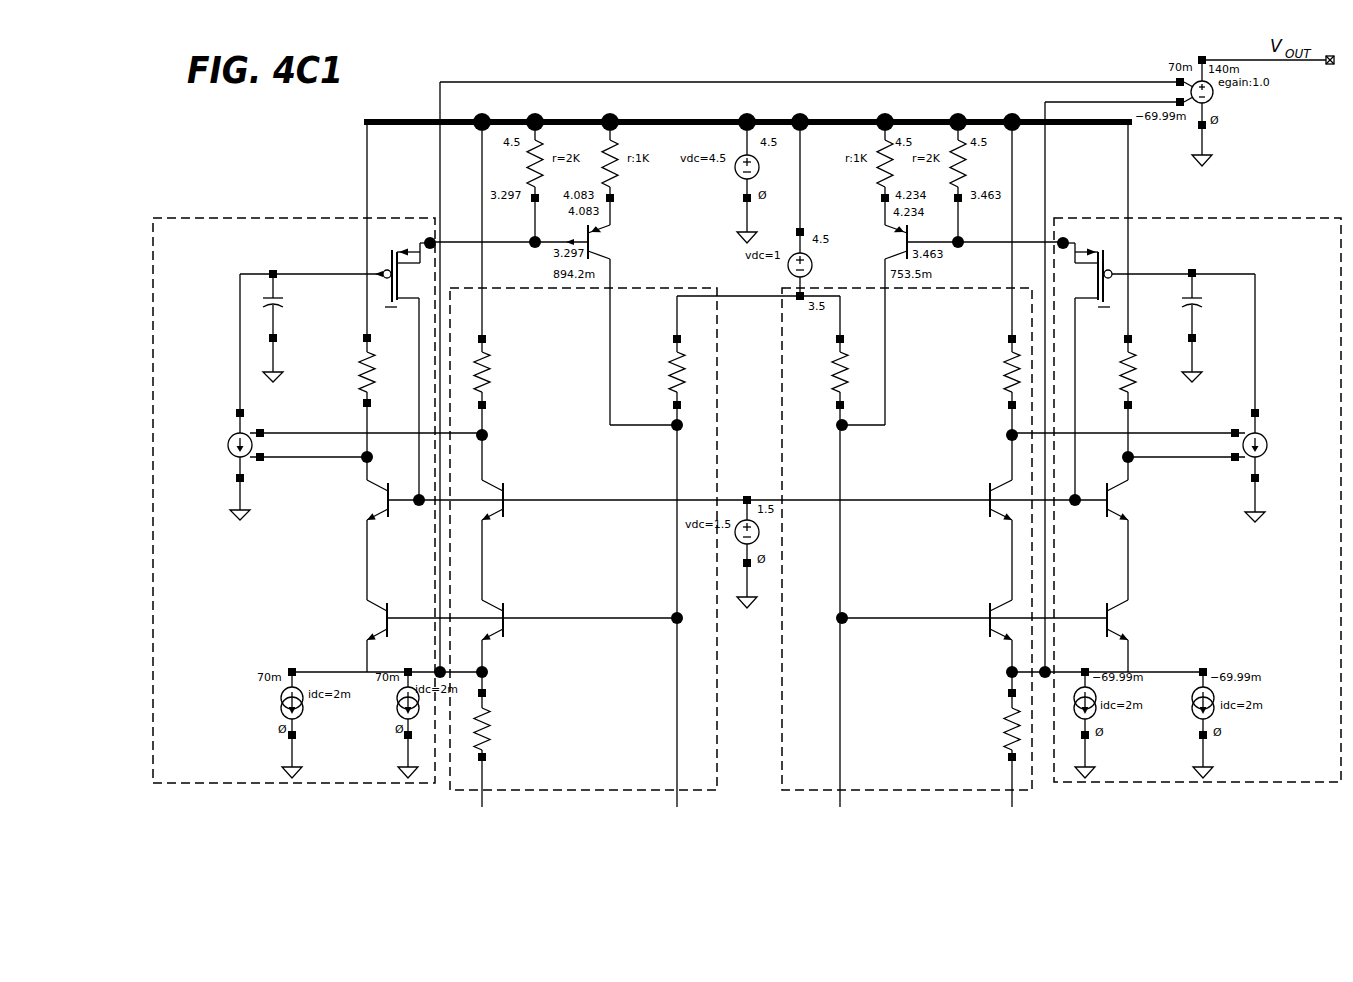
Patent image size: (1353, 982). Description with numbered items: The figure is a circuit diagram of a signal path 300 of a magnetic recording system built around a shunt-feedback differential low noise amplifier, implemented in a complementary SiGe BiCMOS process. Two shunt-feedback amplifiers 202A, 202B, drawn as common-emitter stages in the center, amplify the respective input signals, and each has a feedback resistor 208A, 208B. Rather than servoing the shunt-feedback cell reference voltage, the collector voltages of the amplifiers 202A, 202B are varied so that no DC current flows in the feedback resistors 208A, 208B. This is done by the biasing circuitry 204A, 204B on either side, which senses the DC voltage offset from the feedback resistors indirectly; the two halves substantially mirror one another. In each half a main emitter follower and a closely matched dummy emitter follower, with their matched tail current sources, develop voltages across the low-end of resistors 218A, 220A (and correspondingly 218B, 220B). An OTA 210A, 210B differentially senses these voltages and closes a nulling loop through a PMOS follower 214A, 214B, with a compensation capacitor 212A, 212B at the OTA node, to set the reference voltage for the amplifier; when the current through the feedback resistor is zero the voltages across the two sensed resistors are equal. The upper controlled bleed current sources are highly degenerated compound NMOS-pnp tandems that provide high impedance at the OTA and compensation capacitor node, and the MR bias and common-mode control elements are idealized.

The signal path 300 is at (336, 131).
The biasing circuitry 204A is at (256, 218).
The biasing circuitry 204B is at (1255, 218).
The shunt-feedback amplifier 202A is at (637, 288).
The shunt-feedback amplifier 202B is at (865, 288).
The PMOS follower 214A is at (373, 255).
The PMOS follower 214B is at (1103, 252).
The compensation capacitor 212A is at (272, 302).
The compensation capacitor 212B is at (1200, 307).
The OTA 210A is at (233, 450).
The OTA 210B is at (1266, 453).
The resistor 218A is at (362, 400).
The resistor 218B is at (1137, 390).
The resistor 220A is at (490, 386).
The resistor 220B is at (1010, 383).
The feedback resistor 208A is at (490, 707).
The feedback resistor 208B is at (1008, 735).